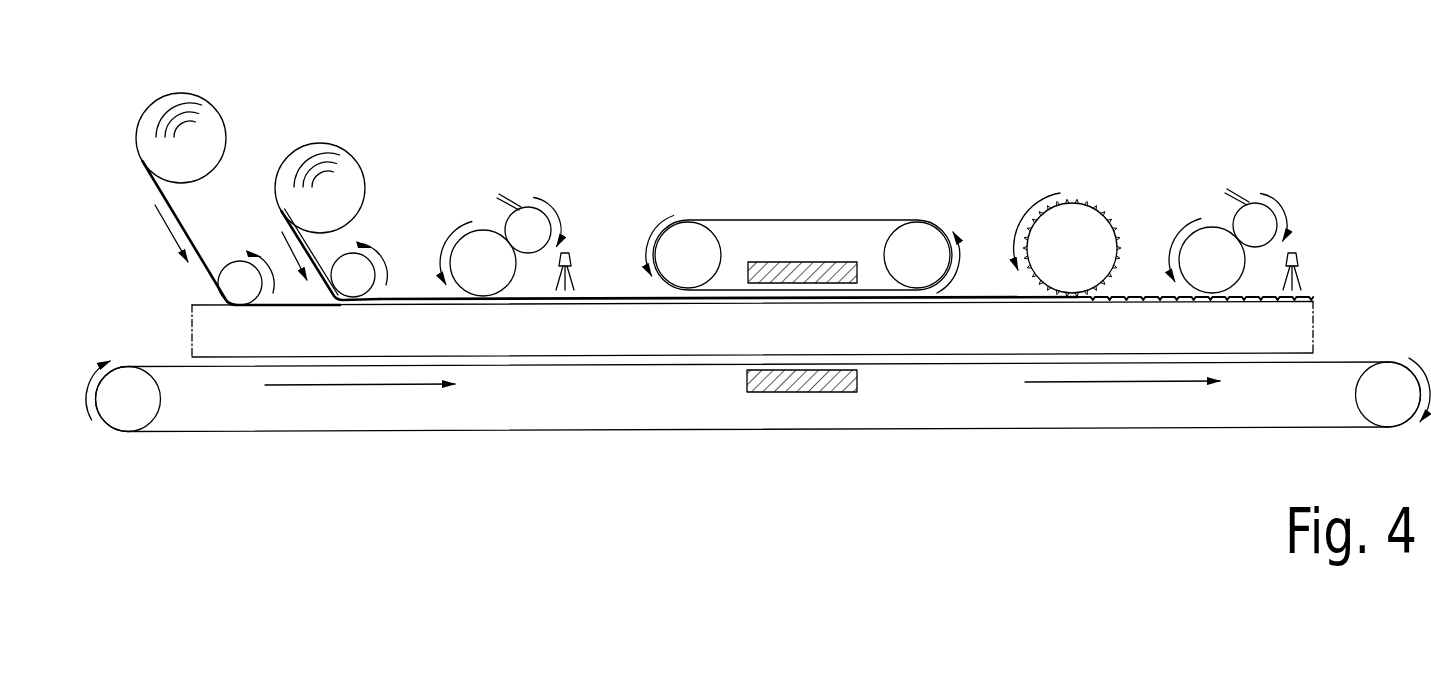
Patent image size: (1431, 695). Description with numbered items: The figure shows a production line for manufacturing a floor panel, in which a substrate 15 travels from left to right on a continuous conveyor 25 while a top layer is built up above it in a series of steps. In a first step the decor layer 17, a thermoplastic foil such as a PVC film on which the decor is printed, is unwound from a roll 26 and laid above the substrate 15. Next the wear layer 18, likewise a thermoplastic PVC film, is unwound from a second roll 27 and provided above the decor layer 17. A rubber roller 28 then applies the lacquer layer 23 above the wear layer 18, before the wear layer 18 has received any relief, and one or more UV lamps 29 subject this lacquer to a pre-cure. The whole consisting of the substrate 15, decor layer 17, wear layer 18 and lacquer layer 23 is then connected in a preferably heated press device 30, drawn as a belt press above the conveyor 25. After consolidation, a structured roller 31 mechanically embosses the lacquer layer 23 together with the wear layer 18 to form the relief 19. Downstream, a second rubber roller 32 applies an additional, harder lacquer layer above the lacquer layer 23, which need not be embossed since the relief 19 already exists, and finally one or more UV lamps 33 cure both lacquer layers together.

The substrate 15 is at (1302, 327).
The decor layer 17 is at (178, 215).
The wear layer 18 is at (398, 302).
The relief 19 is at (1132, 283).
The lacquer layer 23 is at (593, 295).
The continuous conveyor 25 is at (175, 365).
The roll 26 is at (210, 137).
The roll 27 is at (345, 190).
The rubber roller 28 is at (482, 205).
The UV lamp 29 is at (568, 260).
The press device 30 is at (818, 203).
The structured roller 31 is at (1088, 227).
The rubber roller 32 is at (1198, 190).
The UV lamp 33 is at (1297, 257).